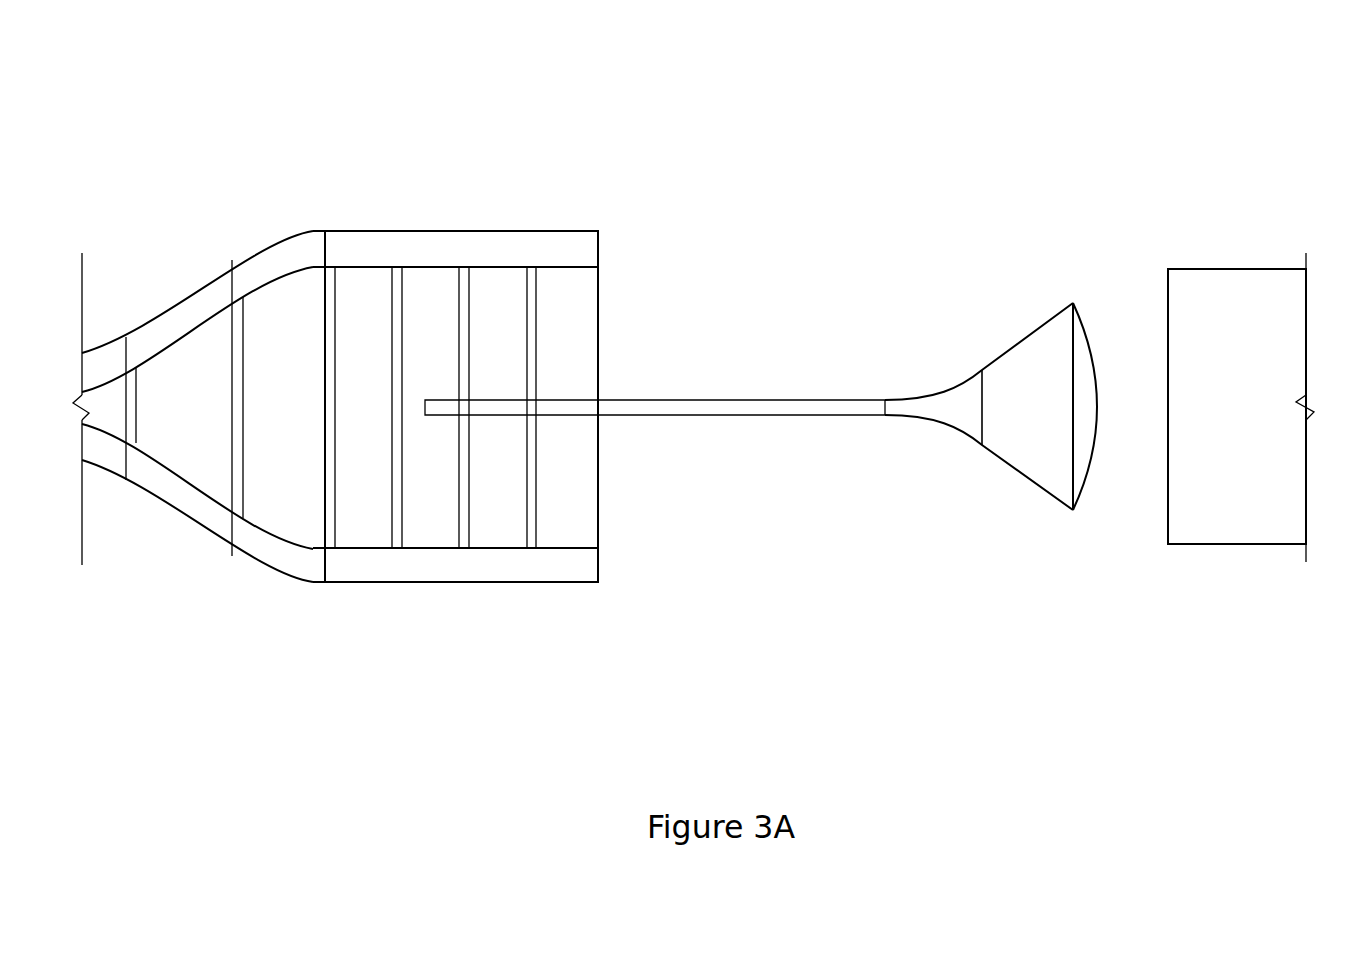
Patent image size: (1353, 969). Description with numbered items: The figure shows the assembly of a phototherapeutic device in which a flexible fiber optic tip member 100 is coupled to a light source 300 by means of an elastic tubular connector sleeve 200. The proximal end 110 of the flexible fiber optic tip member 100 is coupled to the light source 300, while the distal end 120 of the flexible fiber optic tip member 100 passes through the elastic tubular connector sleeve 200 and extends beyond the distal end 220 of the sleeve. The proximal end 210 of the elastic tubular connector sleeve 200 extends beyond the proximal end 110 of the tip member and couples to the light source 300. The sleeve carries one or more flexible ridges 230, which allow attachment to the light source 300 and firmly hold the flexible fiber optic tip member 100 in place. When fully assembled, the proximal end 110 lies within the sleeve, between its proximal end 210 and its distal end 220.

The flexible fiber optic tip member 100 is at (1095, 97).
The proximal end of the flexible fiber optic tip member 110 is at (1073, 512).
The distal end of the flexible fiber optic tip member 120 is at (428, 415).
The elastic tubular connector sleeve 200 is at (600, 695).
The proximal end of the elastic tubular connector sleeve 210 is at (598, 582).
The distal end of the elastic tubular connector sleeve 220 is at (85, 353).
The flexible ridges 230 is at (136, 366).
The light source 300 is at (1248, 544).